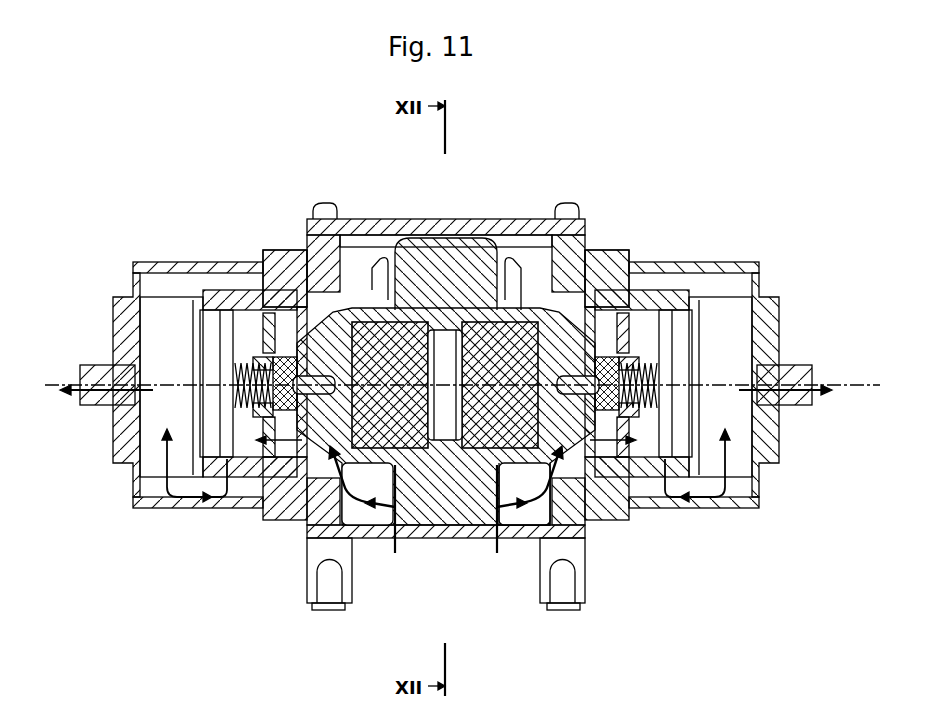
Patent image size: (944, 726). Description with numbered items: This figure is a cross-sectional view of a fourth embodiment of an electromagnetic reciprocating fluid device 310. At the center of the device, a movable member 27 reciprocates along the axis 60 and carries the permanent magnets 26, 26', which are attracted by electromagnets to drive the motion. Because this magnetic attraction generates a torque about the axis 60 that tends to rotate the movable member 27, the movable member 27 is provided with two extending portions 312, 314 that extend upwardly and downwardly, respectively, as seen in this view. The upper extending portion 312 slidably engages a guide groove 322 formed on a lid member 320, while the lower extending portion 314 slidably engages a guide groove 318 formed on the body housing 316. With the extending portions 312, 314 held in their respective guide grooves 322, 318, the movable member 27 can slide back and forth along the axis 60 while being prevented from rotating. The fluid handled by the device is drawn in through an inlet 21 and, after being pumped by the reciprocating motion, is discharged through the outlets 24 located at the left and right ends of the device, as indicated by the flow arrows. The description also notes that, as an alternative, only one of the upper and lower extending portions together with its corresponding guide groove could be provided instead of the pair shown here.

The electromagnetic reciprocating fluid device 310 is at (484, 150).
The extending portion 312 is at (462, 245).
The extending portion 314 is at (447, 514).
The body housing 316 is at (584, 532).
The guide groove 318 is at (513, 510).
The lid member 320 is at (547, 220).
The guide groove 322 is at (358, 245).
The movable member 27 is at (535, 312).
The permanent magnet 26 is at (362, 516).
The permanent magnet 26' is at (512, 512).
The inlet 21 is at (398, 553).
The outlet 24 is at (80, 383).
The axis 60 is at (867, 390).